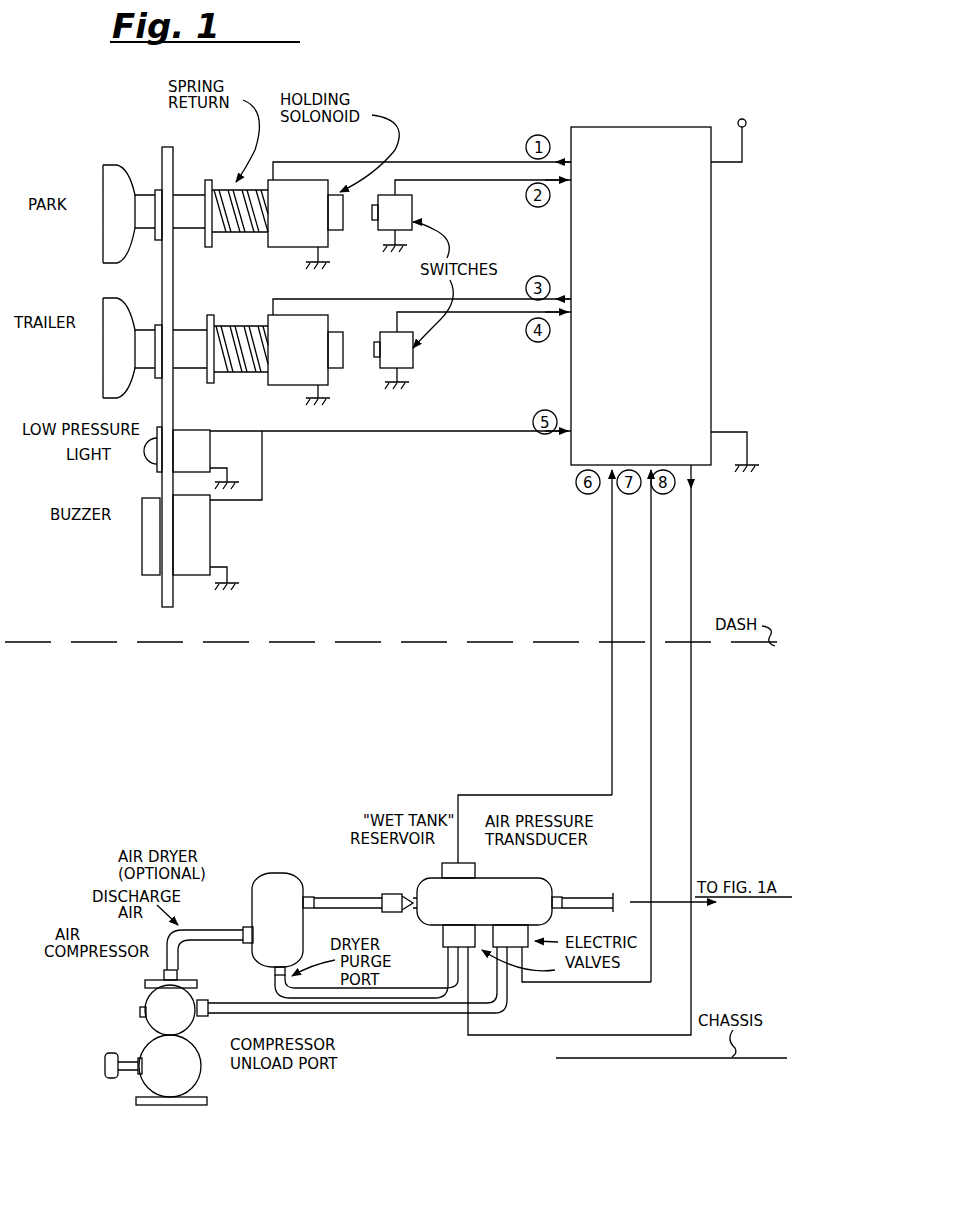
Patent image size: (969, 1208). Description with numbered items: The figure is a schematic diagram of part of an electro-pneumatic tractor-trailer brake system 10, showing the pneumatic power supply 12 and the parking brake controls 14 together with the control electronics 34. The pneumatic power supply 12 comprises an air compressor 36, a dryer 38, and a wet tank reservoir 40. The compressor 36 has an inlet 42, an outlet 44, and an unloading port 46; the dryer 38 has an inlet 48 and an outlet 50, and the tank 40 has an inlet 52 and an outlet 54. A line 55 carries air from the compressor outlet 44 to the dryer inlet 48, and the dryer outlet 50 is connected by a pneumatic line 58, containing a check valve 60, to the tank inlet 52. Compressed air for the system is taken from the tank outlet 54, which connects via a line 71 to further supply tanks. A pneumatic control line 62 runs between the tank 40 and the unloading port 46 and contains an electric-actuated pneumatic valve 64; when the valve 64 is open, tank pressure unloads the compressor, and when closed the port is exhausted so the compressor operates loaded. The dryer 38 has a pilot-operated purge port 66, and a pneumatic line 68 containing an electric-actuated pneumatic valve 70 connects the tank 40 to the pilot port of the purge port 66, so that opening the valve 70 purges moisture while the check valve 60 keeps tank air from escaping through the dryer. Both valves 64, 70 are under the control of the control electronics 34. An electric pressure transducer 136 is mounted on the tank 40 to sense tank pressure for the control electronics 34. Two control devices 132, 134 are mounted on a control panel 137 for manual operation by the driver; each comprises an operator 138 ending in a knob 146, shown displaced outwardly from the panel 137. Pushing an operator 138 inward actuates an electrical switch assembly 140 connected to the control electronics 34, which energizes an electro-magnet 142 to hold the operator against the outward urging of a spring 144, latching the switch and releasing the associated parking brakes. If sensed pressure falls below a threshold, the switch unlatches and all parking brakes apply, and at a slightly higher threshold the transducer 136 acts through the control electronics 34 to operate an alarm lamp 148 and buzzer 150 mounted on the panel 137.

The electro-pneumatic tractor-trailer brake system 10 is at (751, 82).
The pneumatic power supply 12 is at (210, 800).
The parking brake controls 14 is at (425, 95).
The control electronics 34 is at (711, 330).
The air compressor 36 is at (128, 977).
The dryer 38 is at (258, 873).
The wet tank reservoir 40 is at (415, 878).
The inlet 42 is at (140, 1012).
The outlet 44 is at (165, 974).
The unloading port 46 is at (218, 1022).
The inlet 48 is at (247, 927).
The outlet 50 is at (300, 895).
The inlet 52 is at (420, 925).
The outlet 54 is at (560, 896).
The discharge conduit 55 is at (210, 941).
The pneumatic line 58 is at (316, 893).
The check valve 60 is at (390, 910).
The pneumatic control line 62 is at (396, 1016).
The electric-actuated pneumatic valve 64 is at (510, 936).
The purge port 66 is at (272, 976).
The pneumatic line 68 is at (428, 992).
The electric-actuated pneumatic valve 70 is at (459, 936).
The line 71 is at (590, 908).
The control device 132 is at (120, 160).
The control device 134 is at (116, 381).
The electric pressure transducer 136 is at (452, 864).
The control panel 137 is at (167, 592).
The operator 138 is at (115, 183).
The electrical switch assembly 140 is at (400, 212).
The electro-magnet 142 is at (305, 292).
The spring 144 is at (246, 238).
The knob 146 is at (116, 220).
The lamp 148 is at (146, 460).
The buzzer 150 is at (142, 546).